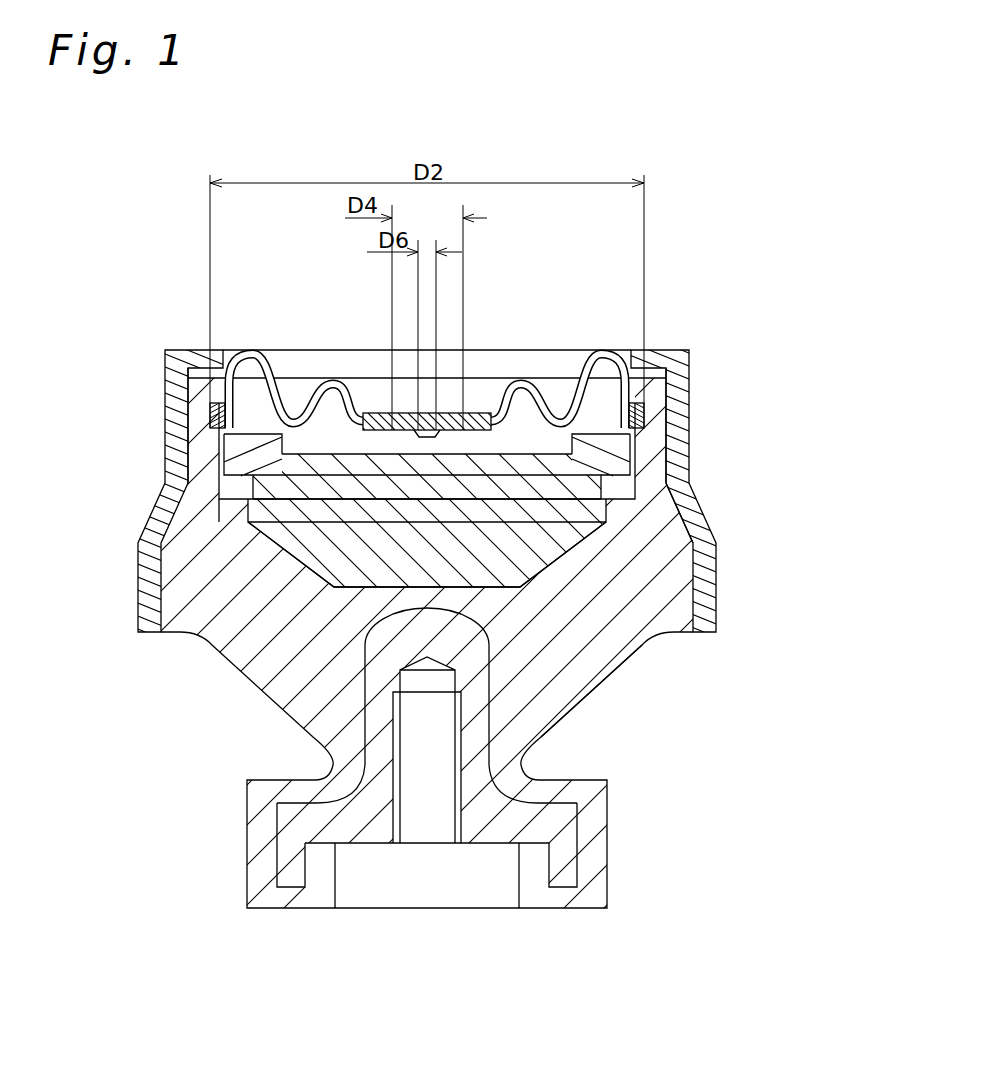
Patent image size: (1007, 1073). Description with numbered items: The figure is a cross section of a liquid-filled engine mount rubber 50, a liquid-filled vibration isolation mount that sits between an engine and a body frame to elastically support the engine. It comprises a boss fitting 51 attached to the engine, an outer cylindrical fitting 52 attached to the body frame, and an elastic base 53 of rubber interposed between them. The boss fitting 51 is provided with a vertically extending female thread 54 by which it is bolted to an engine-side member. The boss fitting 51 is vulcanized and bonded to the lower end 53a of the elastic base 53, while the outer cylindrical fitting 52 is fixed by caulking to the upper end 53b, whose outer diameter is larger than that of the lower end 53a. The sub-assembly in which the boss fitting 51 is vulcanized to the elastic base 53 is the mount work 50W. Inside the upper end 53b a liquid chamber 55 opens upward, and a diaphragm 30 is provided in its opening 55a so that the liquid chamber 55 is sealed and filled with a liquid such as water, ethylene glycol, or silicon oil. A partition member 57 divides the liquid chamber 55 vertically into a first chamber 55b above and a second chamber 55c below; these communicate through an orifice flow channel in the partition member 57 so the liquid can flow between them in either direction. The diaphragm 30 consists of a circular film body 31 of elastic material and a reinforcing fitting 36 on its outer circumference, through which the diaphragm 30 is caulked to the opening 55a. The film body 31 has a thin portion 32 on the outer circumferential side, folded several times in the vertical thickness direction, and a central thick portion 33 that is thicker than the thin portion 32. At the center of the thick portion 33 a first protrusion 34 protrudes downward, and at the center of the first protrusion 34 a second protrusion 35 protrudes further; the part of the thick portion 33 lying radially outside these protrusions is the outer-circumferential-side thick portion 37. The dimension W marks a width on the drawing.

The diaphragm 30 is at (330, 380).
The film body 31 is at (530, 284).
The thin portion 32 is at (558, 383).
The thick portion 33 is at (473, 413).
The first protrusion 34 is at (285, 477).
The second protrusion 35 is at (425, 475).
The reinforcing fitting 36 is at (673, 430).
The outer-circumferential-side thick portion 37 is at (377, 414).
The liquid-filled engine mount rubber 50 is at (645, 803).
The mount work 50W is at (600, 690).
The boss fitting 51 is at (363, 847).
The outer cylindrical fitting 52 is at (685, 402).
The elastic base 53 is at (278, 688).
The lower end 53a is at (262, 822).
The upper end 53b is at (200, 427).
The female thread 54 is at (407, 813).
The liquid chamber 55 is at (353, 473).
The opening 55a is at (607, 358).
The first chamber 55b is at (297, 393).
The second chamber 55c is at (317, 552).
The partition member 57 is at (678, 452).
The width dimension W is at (240, 537).